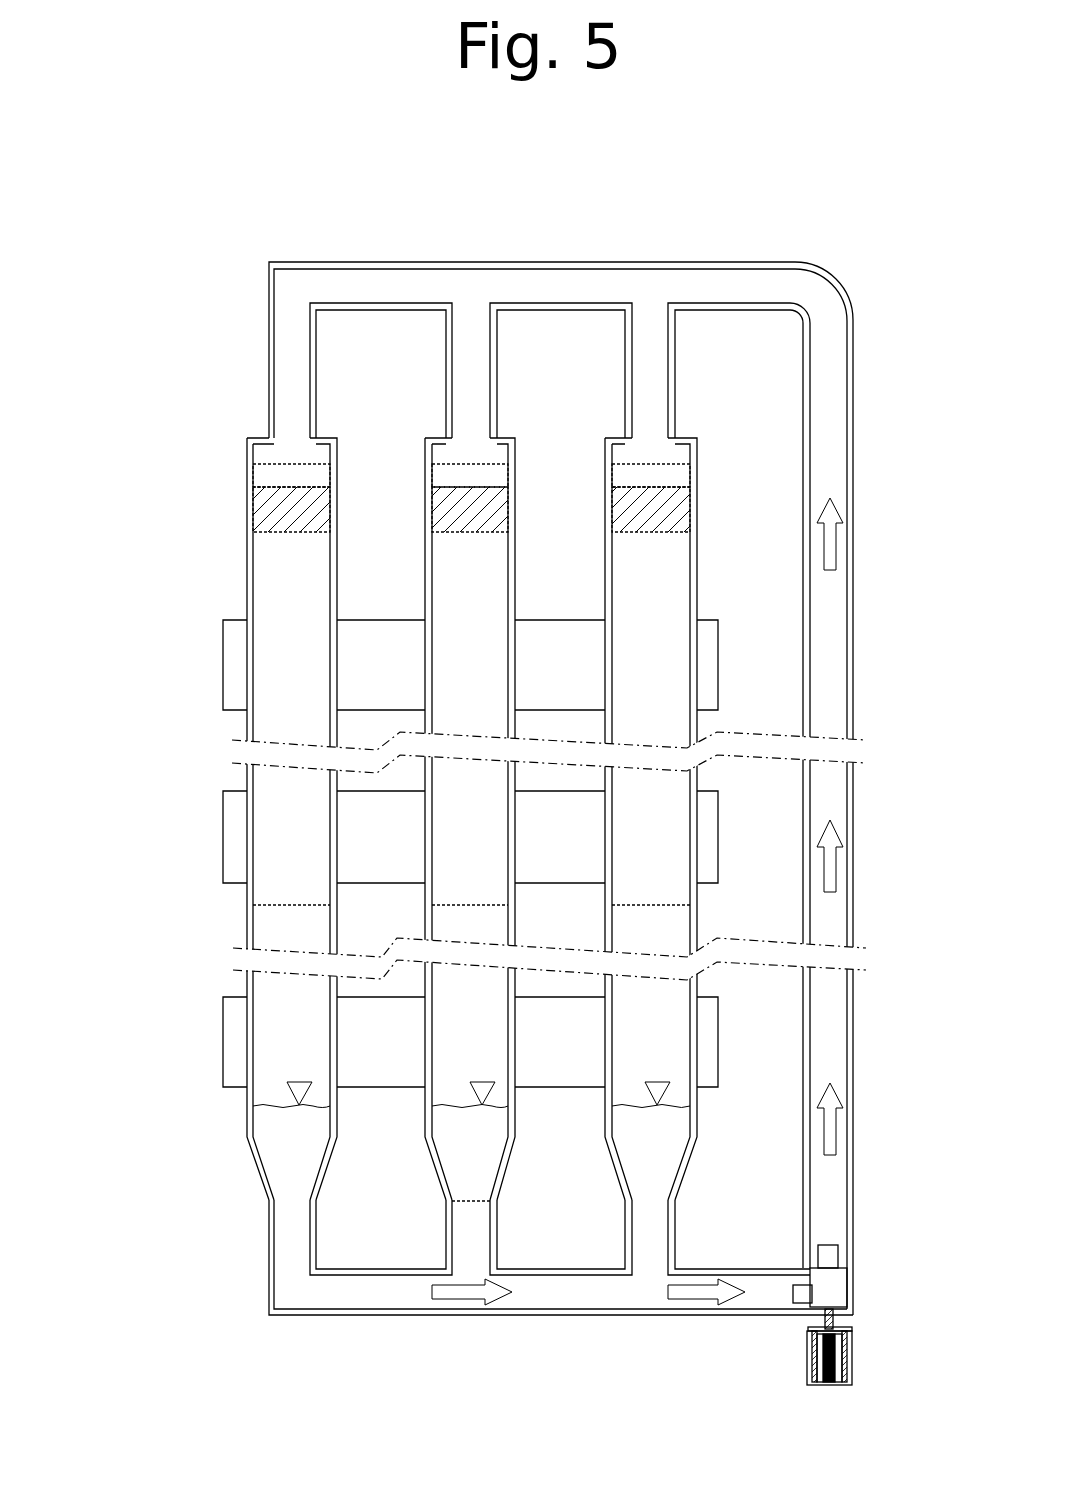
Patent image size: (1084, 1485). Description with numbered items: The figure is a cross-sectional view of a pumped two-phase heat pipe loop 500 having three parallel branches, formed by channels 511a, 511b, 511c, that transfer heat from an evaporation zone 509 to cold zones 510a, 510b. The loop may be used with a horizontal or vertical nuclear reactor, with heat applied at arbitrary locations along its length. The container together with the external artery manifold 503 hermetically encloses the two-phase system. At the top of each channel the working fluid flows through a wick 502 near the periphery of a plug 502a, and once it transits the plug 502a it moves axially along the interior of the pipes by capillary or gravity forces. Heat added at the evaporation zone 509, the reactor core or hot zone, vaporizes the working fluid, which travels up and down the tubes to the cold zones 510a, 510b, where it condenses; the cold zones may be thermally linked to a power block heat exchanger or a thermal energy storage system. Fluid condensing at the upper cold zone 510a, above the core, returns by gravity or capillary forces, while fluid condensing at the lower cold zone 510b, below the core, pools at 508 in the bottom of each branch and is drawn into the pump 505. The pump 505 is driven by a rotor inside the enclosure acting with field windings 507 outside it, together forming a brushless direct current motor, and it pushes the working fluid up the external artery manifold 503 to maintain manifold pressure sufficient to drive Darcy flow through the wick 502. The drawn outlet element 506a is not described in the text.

The pumped two-phase heat pipe loop 500 is at (272, 247).
The wick 502 is at (238, 552).
The plug 502a is at (273, 492).
The external artery manifold 503 is at (868, 435).
The pump 505 is at (852, 1272).
The drain outlet 506a is at (855, 1318).
The field windings 507 is at (804, 1365).
The pool of condensed working fluid 508 is at (282, 1142).
The evaporation zone 509 is at (234, 832).
The cold zone 510a is at (234, 660).
The cold zone 510b is at (234, 1055).
The channel 511a is at (352, 488).
The channel 511b is at (537, 490).
The channel 511c is at (719, 492).